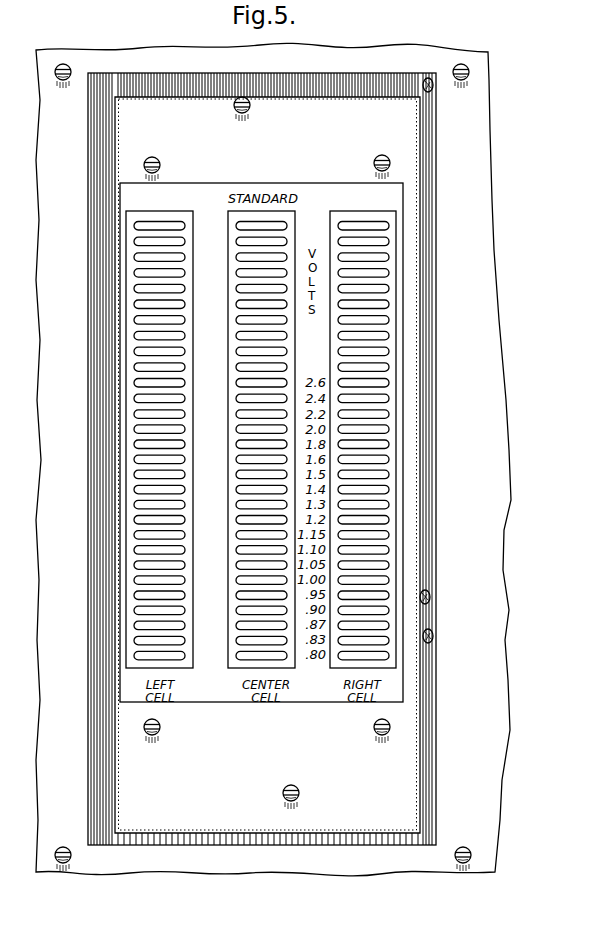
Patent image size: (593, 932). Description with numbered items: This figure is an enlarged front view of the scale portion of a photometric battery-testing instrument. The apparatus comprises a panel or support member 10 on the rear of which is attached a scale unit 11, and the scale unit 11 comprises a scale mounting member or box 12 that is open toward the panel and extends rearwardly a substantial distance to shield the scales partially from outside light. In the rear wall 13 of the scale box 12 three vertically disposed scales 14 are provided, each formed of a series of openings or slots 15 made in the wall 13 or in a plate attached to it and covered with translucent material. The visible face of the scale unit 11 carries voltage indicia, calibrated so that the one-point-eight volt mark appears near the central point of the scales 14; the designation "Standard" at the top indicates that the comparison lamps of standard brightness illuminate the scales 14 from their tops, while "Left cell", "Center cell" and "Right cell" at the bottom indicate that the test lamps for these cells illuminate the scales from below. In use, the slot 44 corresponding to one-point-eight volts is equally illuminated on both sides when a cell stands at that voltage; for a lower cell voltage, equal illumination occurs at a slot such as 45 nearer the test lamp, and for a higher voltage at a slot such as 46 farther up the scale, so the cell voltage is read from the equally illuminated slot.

The panel or support member 10 is at (500, 318).
The scale unit 11 is at (383, 798).
The scale mounting member or box 12 is at (100, 150).
The rear wall 13 is at (268, 464).
The scales 14 is at (228, 212).
The slots 15 is at (238, 657).
The slot 44 is at (240, 445).
The slot 45 is at (386, 491).
The slot 46 is at (386, 414).